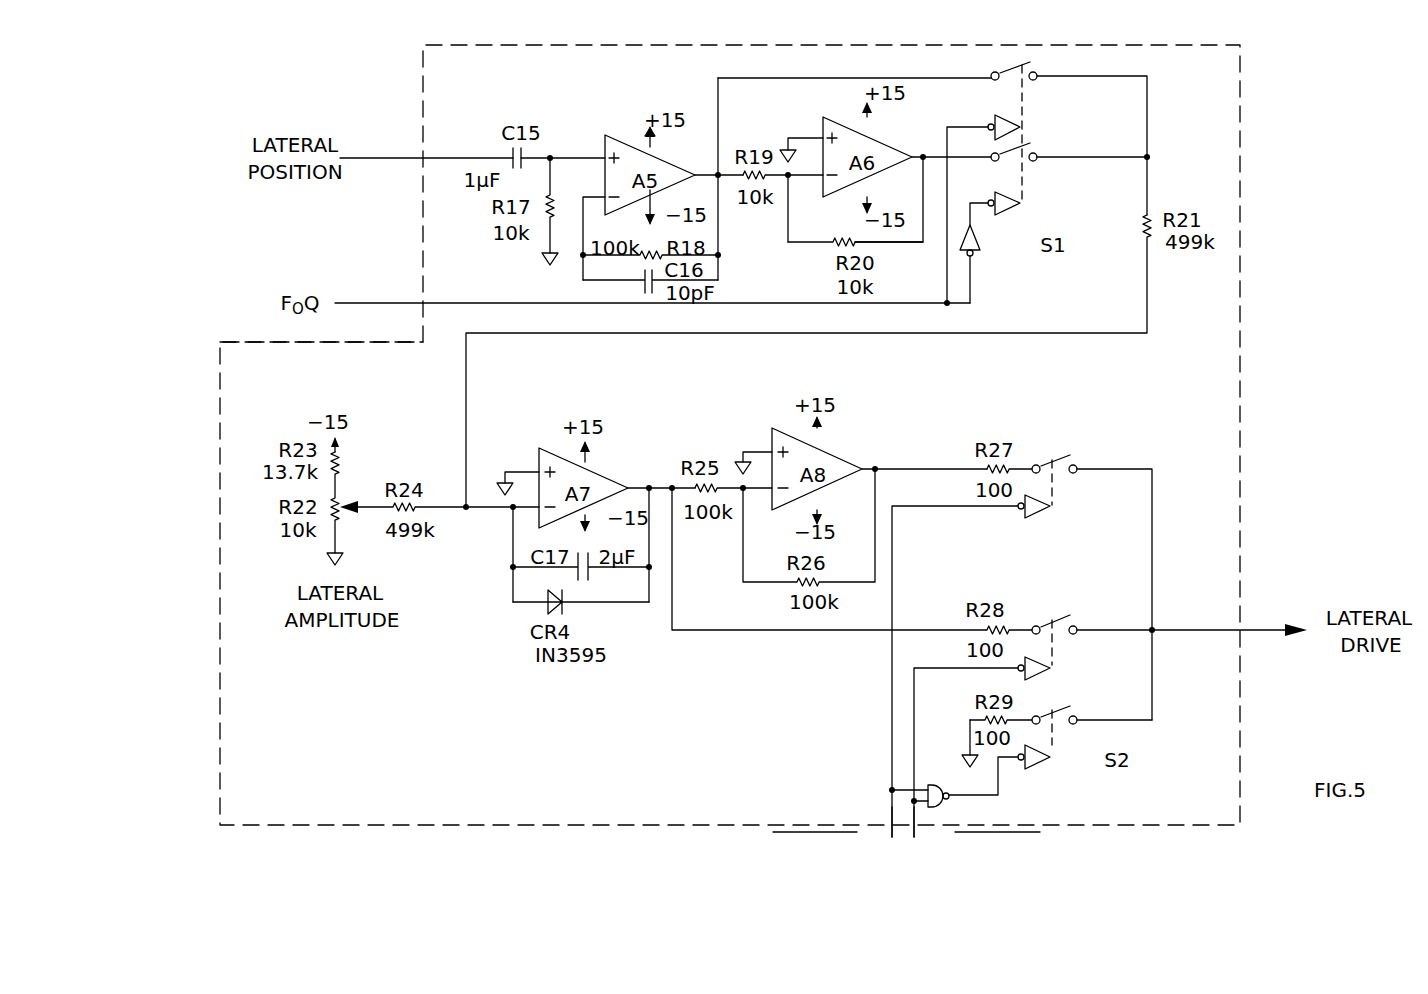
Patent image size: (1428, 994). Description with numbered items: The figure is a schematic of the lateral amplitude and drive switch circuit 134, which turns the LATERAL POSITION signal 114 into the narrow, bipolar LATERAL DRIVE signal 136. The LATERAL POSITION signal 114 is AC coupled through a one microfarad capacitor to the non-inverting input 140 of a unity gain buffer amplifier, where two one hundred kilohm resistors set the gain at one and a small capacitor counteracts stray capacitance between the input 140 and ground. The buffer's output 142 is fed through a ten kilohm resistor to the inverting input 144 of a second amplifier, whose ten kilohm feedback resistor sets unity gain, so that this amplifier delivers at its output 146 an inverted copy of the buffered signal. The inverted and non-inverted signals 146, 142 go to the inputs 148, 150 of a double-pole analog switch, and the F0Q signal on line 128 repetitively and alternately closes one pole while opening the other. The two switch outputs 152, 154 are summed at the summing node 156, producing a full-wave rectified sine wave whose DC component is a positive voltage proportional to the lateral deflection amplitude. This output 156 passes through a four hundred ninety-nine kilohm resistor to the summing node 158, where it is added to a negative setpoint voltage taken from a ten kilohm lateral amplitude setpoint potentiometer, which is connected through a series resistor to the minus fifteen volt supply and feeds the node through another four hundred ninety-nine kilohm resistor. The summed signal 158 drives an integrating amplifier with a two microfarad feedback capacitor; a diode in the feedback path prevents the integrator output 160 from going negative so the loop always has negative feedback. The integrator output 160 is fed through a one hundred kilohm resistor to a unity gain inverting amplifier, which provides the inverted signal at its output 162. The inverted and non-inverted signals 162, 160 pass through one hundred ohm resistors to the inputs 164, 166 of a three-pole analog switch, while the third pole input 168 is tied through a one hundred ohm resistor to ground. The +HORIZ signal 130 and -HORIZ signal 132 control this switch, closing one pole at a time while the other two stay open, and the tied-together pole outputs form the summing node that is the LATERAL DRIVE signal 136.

The LATERAL POSITION signal 114 is at (398, 158).
The F0Q line 128 is at (383, 303).
The +HORIZ line 130 is at (892, 838).
The -HORIZ line 132 is at (914, 838).
The lateral amplitude and drive switch circuit 134 is at (195, 797).
The LATERAL DRIVE signal 136 is at (1213, 630).
The non-inverting input 140 is at (578, 158).
The output of amplifier A5 142 is at (701, 172).
The inverting input 144 is at (797, 180).
The output of amplifier A6 146 is at (925, 155).
The switch S1 input 148 is at (978, 76).
The switch S1 input 150 is at (955, 158).
The switch output 152 is at (1072, 76).
The switch output 154 is at (1057, 157).
The summing node 156 is at (1152, 155).
The summing node 158 is at (465, 505).
The output of amplifier A7 160 is at (636, 487).
The output of amplifier A8 162 is at (882, 467).
The switch S2 input 164 is at (1022, 466).
The switch S2 input 166 is at (1022, 627).
The switch S2 third pole input 168 is at (1025, 718).